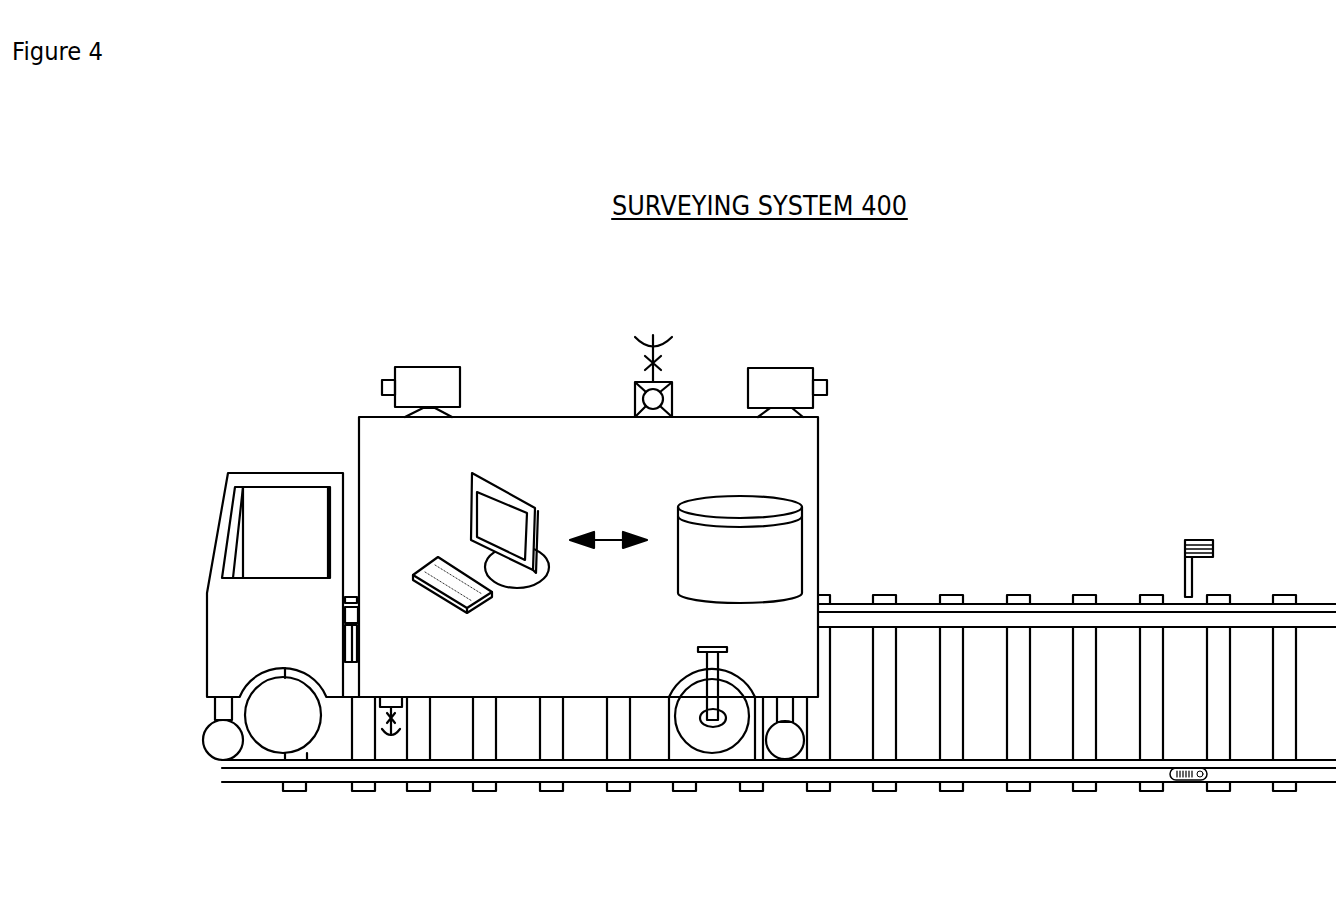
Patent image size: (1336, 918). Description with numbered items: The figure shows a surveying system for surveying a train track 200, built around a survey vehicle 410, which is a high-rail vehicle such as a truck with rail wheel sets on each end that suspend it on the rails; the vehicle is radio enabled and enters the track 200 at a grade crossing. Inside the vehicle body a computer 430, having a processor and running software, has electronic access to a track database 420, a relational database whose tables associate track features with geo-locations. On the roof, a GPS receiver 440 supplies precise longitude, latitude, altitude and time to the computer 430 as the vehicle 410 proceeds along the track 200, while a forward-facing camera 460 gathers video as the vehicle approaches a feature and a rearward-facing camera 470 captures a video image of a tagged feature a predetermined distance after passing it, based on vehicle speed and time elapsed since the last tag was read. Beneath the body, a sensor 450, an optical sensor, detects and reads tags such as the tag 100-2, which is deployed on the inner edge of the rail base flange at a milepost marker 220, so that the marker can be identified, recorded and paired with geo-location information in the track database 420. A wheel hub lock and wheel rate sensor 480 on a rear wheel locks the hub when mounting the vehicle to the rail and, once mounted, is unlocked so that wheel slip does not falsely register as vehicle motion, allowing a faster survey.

The tag 100-2 is at (1188, 782).
The train track 200 is at (1062, 605).
The milepost marker 220 is at (1210, 557).
The survey vehicle 410 is at (305, 472).
The track database 420 is at (740, 492).
The computer 430 is at (475, 480).
The GPS receiver 440 is at (637, 382).
The sensor 450 is at (390, 703).
The forward-facing camera 460 is at (427, 370).
The rearward-facing camera 470 is at (782, 370).
The wheel hub lock and wheel rate sensor 480 is at (703, 713).